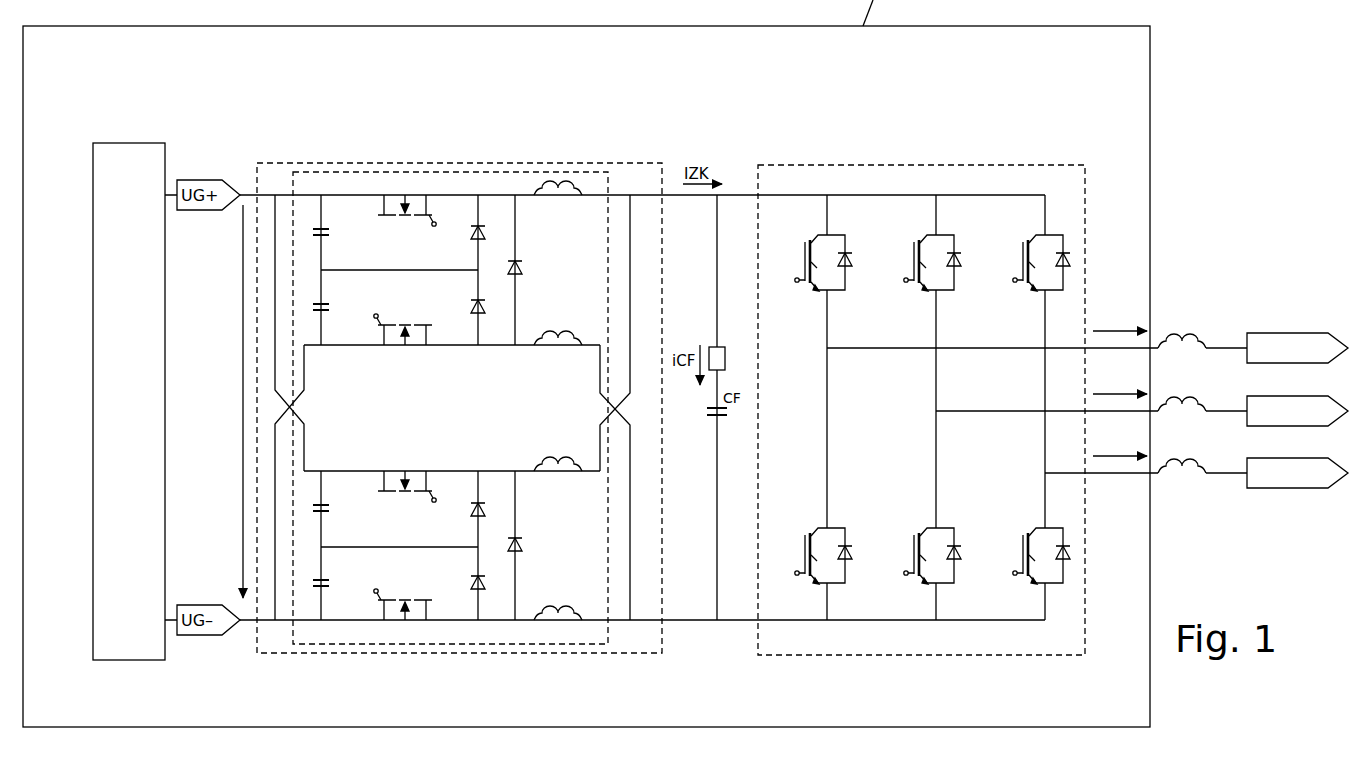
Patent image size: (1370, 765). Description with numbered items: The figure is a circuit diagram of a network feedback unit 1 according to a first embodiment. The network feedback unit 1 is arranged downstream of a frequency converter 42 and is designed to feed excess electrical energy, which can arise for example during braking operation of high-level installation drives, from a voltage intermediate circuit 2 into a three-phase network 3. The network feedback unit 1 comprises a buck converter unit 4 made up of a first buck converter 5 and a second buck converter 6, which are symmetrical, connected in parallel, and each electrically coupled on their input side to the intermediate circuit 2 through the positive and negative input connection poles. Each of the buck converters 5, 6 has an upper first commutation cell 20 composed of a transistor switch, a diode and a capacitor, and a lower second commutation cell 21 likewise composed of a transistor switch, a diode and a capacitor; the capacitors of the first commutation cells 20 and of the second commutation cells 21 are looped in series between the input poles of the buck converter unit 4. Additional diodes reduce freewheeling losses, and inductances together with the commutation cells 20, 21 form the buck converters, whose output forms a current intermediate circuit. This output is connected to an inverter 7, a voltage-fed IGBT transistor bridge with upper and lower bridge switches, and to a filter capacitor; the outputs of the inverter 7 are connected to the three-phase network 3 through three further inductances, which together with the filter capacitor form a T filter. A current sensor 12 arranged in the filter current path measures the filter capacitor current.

The network feedback unit 1 is at (586, 363).
The intermediate circuit 2 is at (206, 401).
The three-phase network 3 is at (1087, 347).
The buck converter unit 4 is at (502, 163).
The first buck converter 5 is at (481, 398).
The second buck converter 6 is at (497, 415).
The inverter 7 is at (1022, 165).
The current sensor 12 is at (724, 357).
The first commutation cell 20 is at (418, 250).
The second commutation cell 21 is at (419, 305).
The frequency converter 42 is at (137, 143).